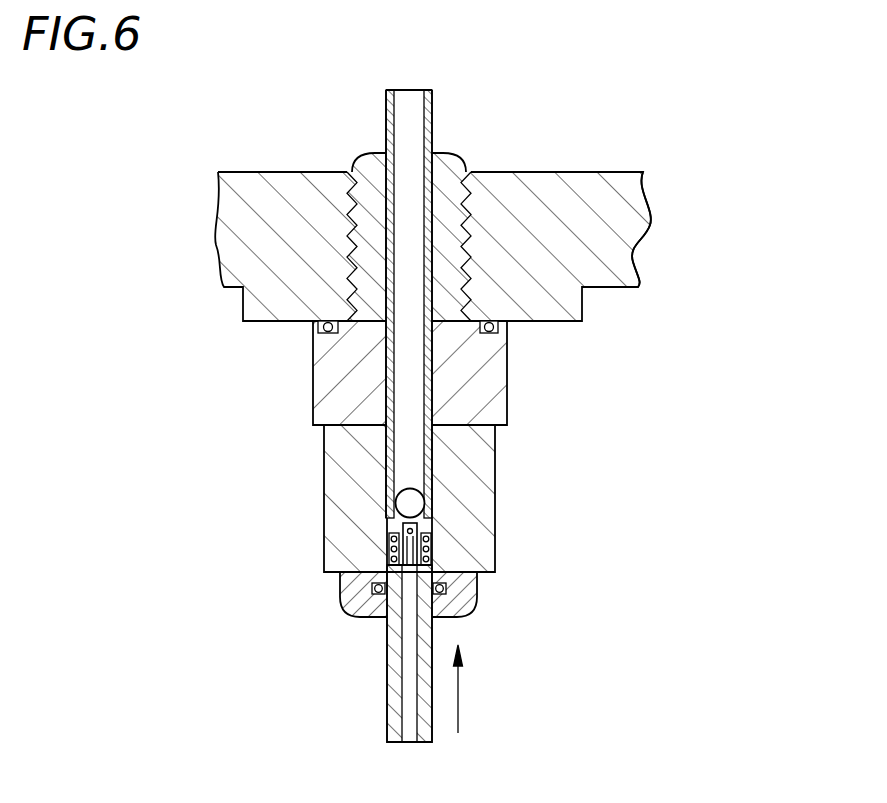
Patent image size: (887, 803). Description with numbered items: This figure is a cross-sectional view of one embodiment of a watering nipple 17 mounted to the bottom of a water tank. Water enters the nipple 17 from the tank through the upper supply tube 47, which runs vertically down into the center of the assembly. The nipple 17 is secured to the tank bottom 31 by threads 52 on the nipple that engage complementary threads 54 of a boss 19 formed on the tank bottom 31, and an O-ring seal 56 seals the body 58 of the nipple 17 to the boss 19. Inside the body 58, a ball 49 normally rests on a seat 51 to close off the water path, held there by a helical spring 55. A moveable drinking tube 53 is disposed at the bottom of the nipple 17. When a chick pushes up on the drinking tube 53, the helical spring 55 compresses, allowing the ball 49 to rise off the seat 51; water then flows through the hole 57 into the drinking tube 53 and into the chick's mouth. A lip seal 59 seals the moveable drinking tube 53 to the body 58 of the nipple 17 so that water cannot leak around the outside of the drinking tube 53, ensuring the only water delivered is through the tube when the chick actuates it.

The nipple 17 is at (140, 435).
The boss 19 is at (583, 310).
The tank bottom 31 is at (625, 287).
The upper supply tube 47 is at (432, 115).
The ball 49 is at (415, 500).
The seat 51 is at (422, 528).
The threads 52 is at (345, 290).
The drinking tube 53 is at (433, 692).
The complementary threads 54 is at (343, 215).
The helical spring 55 is at (433, 547).
The O-ring seal 56 is at (505, 327).
The hole 57 is at (375, 587).
The body 58 is at (325, 508).
The lip seal 59 is at (345, 605).